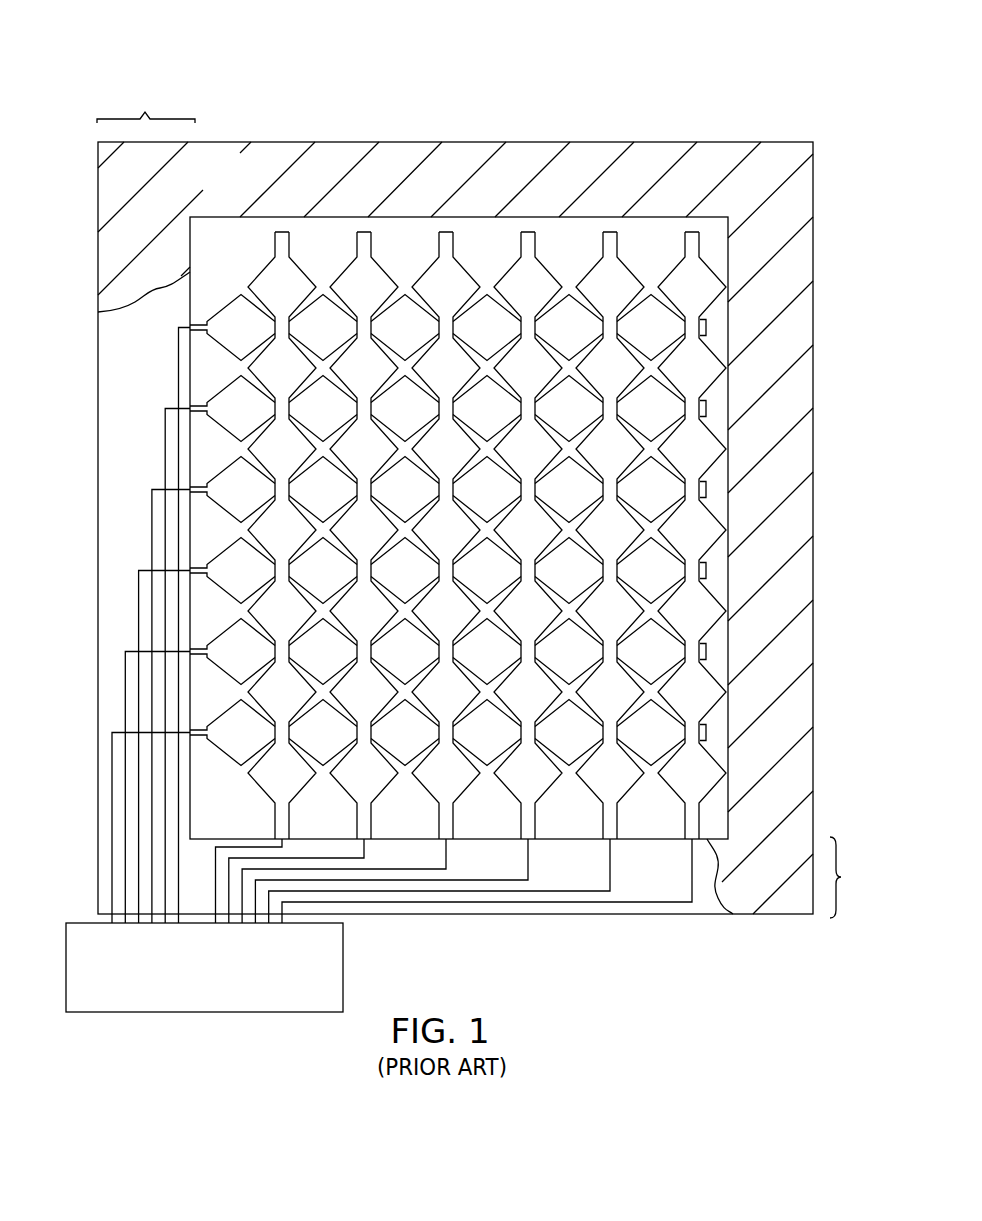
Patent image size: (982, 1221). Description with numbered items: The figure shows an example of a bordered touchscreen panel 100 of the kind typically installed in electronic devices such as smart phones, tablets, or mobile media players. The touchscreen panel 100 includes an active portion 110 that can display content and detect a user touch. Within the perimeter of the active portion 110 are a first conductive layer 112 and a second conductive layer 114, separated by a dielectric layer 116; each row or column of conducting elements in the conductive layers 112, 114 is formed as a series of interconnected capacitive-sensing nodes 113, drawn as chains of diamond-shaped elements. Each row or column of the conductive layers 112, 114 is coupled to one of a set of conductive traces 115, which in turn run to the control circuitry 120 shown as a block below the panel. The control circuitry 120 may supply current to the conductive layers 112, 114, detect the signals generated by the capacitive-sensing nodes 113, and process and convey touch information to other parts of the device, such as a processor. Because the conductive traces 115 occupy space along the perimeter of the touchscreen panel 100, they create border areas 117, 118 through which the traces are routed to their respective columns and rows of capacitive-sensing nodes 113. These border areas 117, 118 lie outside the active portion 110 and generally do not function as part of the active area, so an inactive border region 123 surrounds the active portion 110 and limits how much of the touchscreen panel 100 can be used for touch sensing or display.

The touchscreen panel 100 is at (362, 55).
The active portion 110 is at (728, 588).
The first conductive layer 112 is at (348, 274).
The capacitive-sensing nodes 113 is at (703, 352).
The second conductive layer 114 is at (226, 308).
The conductive traces 115 is at (125, 693).
The dielectric layer 116 is at (233, 232).
The border area 117 is at (146, 100).
The border area 118 is at (856, 877).
The control circuitry 120 is at (225, 981).
The inactive border region 123 is at (475, 152).